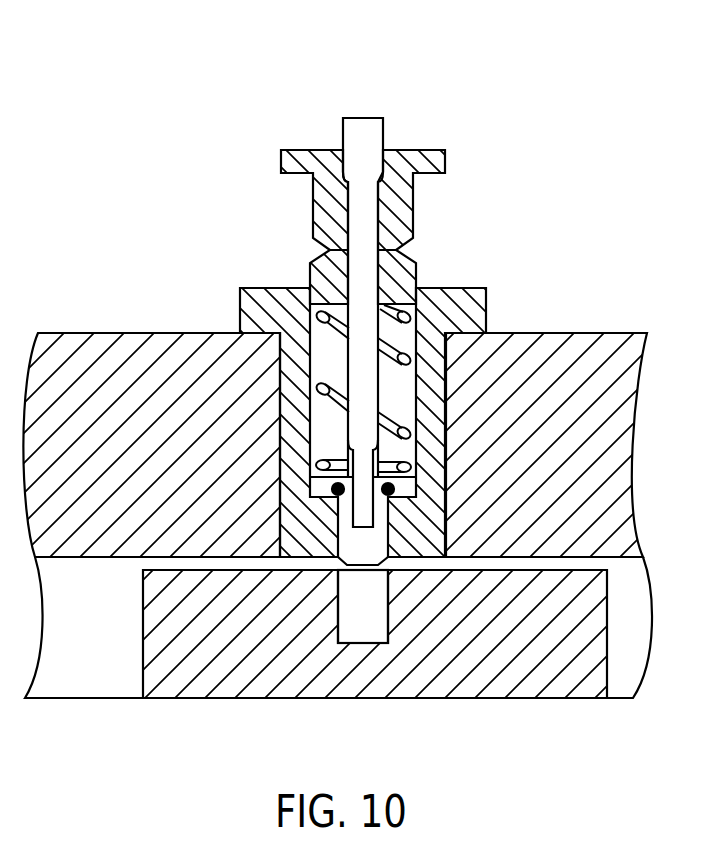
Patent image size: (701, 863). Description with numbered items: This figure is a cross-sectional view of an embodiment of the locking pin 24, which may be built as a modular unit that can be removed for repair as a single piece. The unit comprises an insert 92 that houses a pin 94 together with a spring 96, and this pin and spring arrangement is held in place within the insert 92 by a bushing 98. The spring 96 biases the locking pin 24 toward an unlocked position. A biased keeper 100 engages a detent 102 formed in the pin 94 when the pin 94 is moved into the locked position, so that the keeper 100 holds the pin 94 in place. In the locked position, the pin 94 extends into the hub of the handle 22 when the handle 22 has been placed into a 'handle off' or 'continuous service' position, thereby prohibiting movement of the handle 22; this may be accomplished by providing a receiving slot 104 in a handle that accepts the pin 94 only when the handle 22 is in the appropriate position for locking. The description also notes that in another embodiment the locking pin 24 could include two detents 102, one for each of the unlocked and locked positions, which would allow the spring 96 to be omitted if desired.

The locking pin 24 is at (486, 80).
The handle 22 is at (200, 692).
The insert 92 is at (271, 293).
The pin 94 is at (357, 421).
The spring 96 is at (401, 332).
The bushing 98 is at (406, 256).
The biased keeper 100 is at (406, 490).
The detent 102 is at (390, 453).
The receiving slot 104 is at (371, 616).